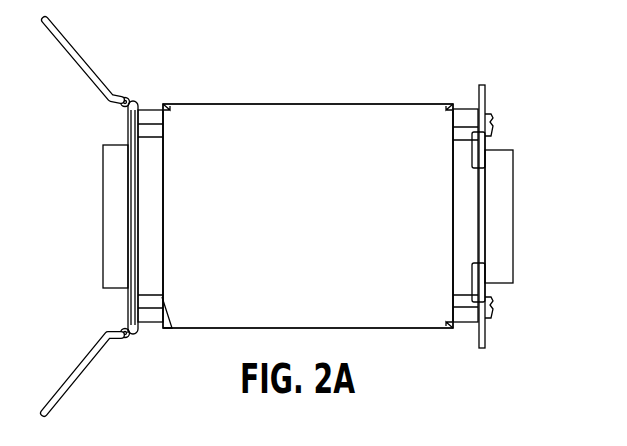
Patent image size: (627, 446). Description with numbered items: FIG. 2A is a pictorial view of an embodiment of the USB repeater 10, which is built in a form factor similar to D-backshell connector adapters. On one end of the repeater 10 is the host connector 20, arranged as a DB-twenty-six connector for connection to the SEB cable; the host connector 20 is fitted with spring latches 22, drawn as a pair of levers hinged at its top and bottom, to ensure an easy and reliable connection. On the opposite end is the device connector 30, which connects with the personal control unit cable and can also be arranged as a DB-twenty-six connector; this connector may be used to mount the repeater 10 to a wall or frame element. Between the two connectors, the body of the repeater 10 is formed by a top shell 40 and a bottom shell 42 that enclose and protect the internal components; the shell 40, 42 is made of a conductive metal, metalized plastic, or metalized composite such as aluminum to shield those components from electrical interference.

The USB repeater 10 is at (424, 31).
The host connector 20 is at (115, 187).
The spring latches 22 is at (73, 54).
The device connector 30 is at (495, 188).
The top shell 40 is at (340, 115).
The bottom shell 42 is at (308, 216).